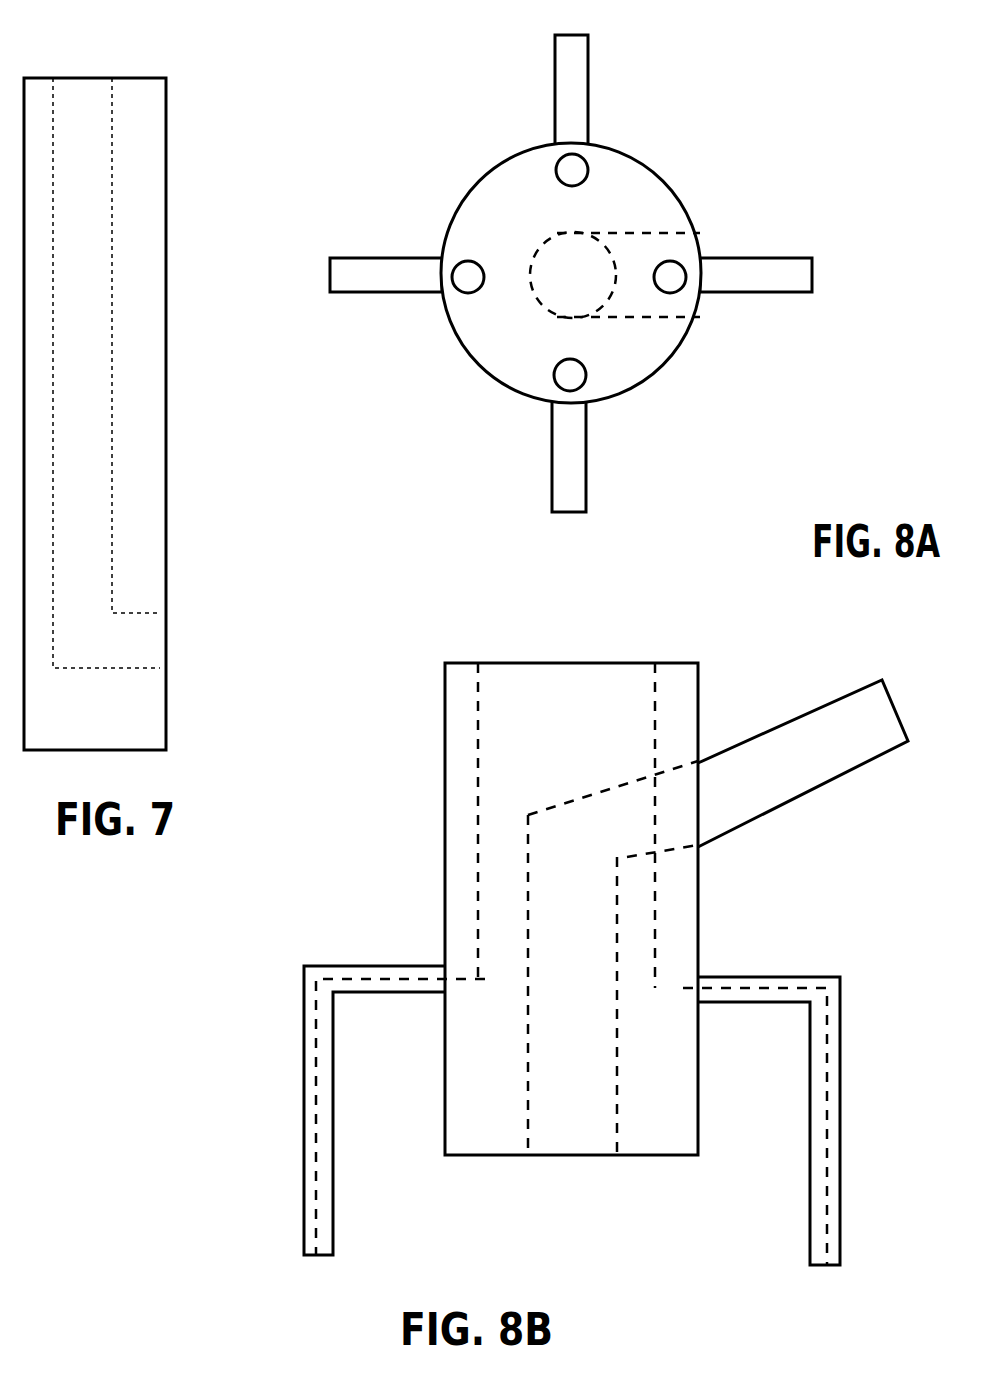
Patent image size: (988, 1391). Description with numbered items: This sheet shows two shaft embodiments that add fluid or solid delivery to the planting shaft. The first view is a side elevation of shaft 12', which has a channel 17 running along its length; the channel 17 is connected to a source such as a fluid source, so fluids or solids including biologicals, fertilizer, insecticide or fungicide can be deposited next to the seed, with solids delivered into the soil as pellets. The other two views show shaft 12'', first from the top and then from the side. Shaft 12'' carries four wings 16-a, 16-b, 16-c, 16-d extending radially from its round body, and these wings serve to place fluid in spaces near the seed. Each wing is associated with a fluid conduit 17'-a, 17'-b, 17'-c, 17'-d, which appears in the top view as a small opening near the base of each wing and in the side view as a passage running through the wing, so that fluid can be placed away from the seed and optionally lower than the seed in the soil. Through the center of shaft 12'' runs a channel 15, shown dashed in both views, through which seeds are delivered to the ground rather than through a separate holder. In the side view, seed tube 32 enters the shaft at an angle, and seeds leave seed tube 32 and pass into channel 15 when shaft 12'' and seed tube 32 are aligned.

In FIG. 7, the shaft 12' is at (158, 412).
In FIG. 7, the channel 17 is at (145, 394).
In FIG. 8A, the shaft 12'' is at (620, 273).
In FIG. 8B, the shaft 12'' is at (572, 883).
In FIG. 8A, the wing 16-a is at (385, 260).
In FIG. 8B, the wing 16-a is at (330, 966).
In FIG. 8A, the wing 16-b is at (586, 484).
In FIG. 8A, the wing 16-c is at (760, 258).
In FIG. 8B, the wing 16-c is at (797, 977).
In FIG. 8A, the wing 16-d is at (588, 48).
In FIG. 8A, the fluid conduit 17'-a is at (432, 331).
In FIG. 8B, the fluid conduit 17'-a is at (344, 1160).
In FIG. 8A, the fluid conduit 17'-b is at (665, 414).
In FIG. 8A, the fluid conduit 17'-c is at (753, 324).
In FIG. 8B, the fluid conduit 17'-c is at (755, 1162).
In FIG. 8A, the fluid conduit 17'-d is at (660, 141).
In FIG. 8A, the channel 15 is at (578, 318).
In FIG. 8B, the channel 15 is at (581, 1160).
In FIG. 8B, the seed tube 32 is at (780, 717).